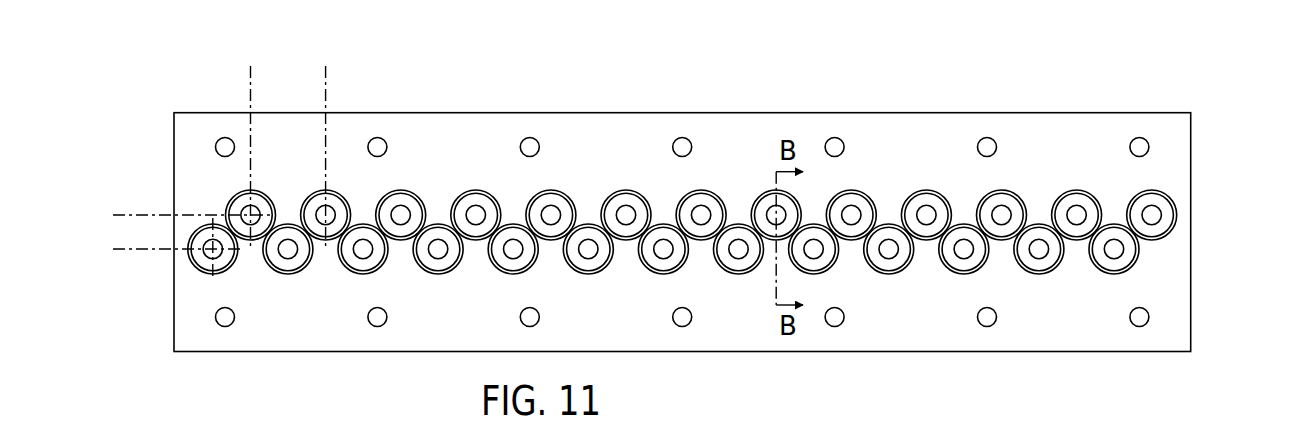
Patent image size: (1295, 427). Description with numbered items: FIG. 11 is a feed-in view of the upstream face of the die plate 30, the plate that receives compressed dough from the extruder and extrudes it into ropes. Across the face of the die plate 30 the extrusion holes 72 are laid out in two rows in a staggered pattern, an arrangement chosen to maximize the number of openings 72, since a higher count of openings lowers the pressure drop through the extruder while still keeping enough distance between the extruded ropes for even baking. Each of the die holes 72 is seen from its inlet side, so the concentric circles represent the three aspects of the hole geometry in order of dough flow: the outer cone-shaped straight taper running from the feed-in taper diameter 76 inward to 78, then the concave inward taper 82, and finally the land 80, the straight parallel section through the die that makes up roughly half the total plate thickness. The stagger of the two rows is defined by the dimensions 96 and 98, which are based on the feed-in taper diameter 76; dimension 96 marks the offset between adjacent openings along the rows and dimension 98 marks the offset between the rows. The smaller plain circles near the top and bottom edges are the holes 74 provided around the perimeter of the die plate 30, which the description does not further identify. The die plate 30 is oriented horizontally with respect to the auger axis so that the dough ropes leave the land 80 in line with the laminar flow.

The die plate 30 is at (1108, 93).
The extrusion holes 72 is at (730, 203).
The mounting holes 74 is at (1139, 136).
The feed in taper diameter 76 is at (851, 156).
The straight taper inner end 78 is at (938, 155).
The die plate land 80 is at (946, 174).
The concave inward taper 82 is at (940, 280).
The stagger dimension 96 is at (227, 82).
The stagger dimension 98 is at (132, 272).